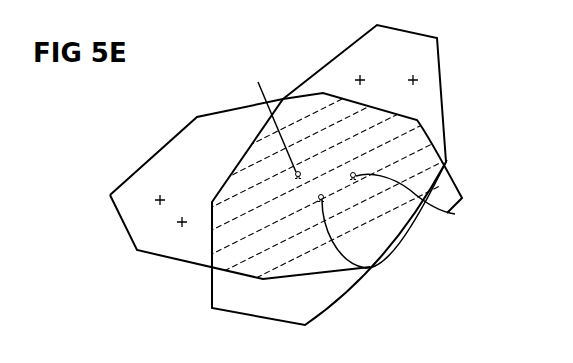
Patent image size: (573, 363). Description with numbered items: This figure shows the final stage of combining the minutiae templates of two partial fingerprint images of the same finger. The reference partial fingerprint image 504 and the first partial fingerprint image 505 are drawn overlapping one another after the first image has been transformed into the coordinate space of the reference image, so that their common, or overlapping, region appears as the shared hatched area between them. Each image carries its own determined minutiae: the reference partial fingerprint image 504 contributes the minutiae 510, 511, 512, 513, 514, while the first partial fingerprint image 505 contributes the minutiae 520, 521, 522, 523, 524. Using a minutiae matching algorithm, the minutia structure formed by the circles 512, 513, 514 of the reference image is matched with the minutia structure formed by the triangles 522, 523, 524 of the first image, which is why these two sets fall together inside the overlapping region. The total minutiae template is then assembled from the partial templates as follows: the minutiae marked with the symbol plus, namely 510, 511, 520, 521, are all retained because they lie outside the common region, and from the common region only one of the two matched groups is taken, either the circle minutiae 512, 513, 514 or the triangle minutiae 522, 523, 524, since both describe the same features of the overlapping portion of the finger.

The reference partial fingerprint image 504 is at (144, 164).
The first partial fingerprint image 505 is at (448, 112).
The minutia designated by the symbol "+" 510 is at (154, 201).
The minutia designated by the symbol "+" 511 is at (181, 223).
The minutia designated by the symbol "+" 520 is at (355, 76).
The minutia designated by the symbol "+" 521 is at (416, 79).
The minutia designated by the symbol "o" 512 is at (249, 118).
The minutia designated by the symbol "o" 513 is at (429, 207).
The minutia designated by the symbol "o" 514 is at (370, 267).
The minutia designated by the symbol "A" 522 is at (294, 172).
The minutia designated by the symbol "A" 523 is at (308, 210).
The minutia designated by the symbol "A" 524 is at (354, 180).